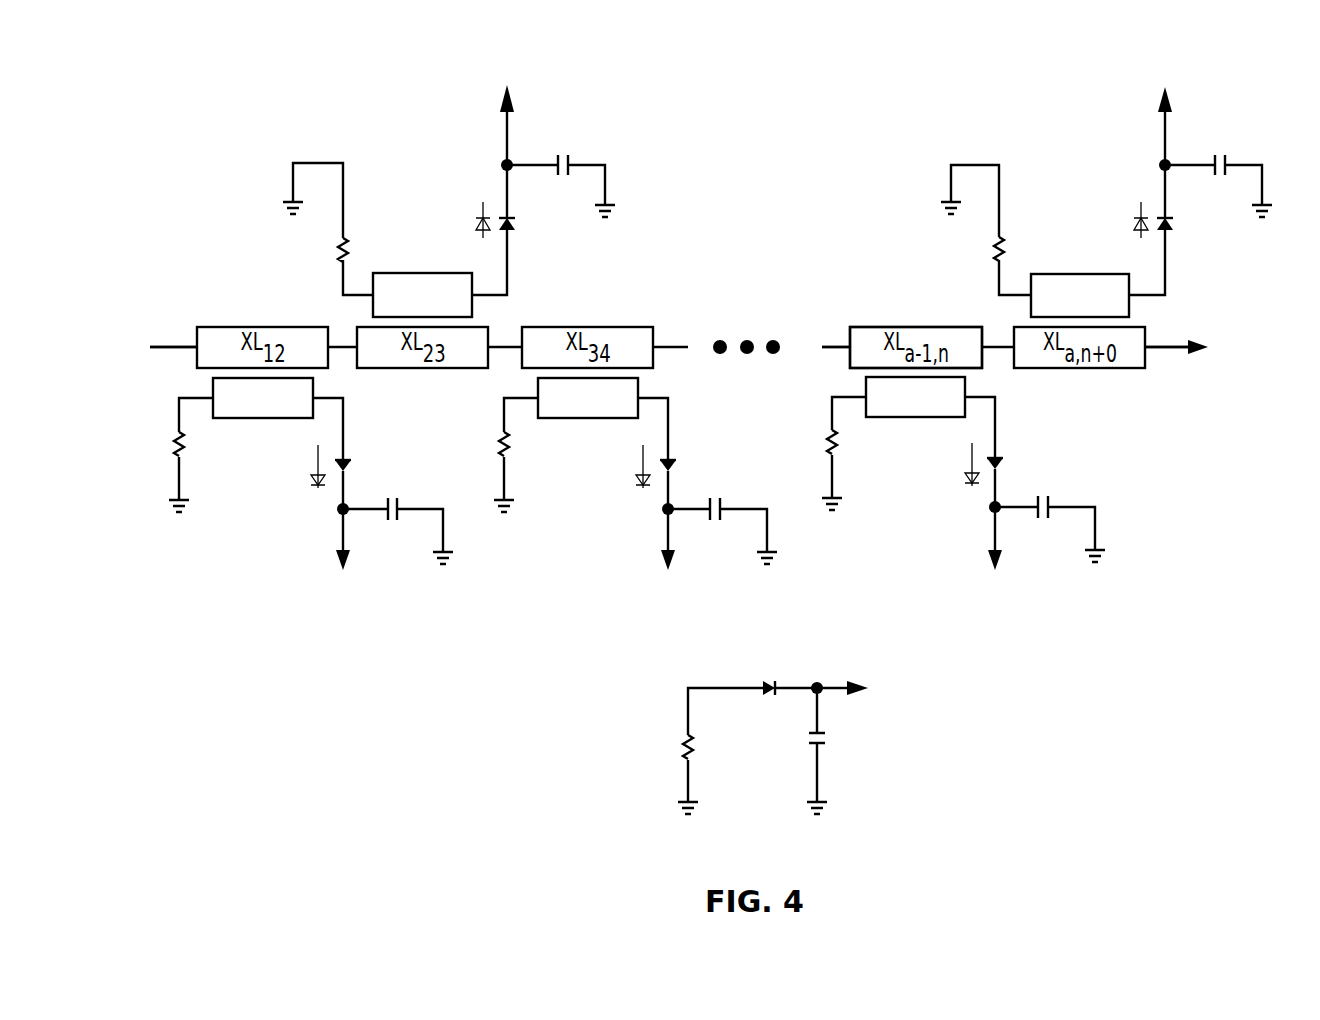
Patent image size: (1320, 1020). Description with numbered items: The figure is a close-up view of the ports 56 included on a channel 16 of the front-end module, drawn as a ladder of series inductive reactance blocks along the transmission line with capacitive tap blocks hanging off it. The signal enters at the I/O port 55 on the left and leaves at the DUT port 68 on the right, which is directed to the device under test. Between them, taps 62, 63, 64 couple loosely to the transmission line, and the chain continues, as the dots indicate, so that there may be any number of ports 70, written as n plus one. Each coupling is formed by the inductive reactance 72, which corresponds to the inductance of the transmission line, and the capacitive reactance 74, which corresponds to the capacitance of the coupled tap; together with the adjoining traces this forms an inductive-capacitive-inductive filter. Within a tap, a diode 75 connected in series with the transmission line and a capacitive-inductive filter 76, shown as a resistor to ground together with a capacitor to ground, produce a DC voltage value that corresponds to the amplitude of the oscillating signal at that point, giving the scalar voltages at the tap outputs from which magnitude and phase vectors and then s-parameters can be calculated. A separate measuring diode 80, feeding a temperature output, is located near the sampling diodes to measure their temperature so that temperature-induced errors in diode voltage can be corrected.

The ports 56 is at (186, 116).
The I/O port 55 is at (165, 345).
The channel 16 is at (825, 347).
The tap 62 is at (249, 457).
The tap 63 is at (440, 273).
The tap 64 is at (562, 457).
The DUT port 68 is at (1177, 350).
The ports 70 is at (1090, 274).
The inductive reactance 72 is at (913, 326).
The capacitive reactance 74 is at (903, 453).
The diode 75 is at (514, 223).
The capacitive-inductive filter 76 is at (300, 258).
The measuring diode 80 is at (766, 748).